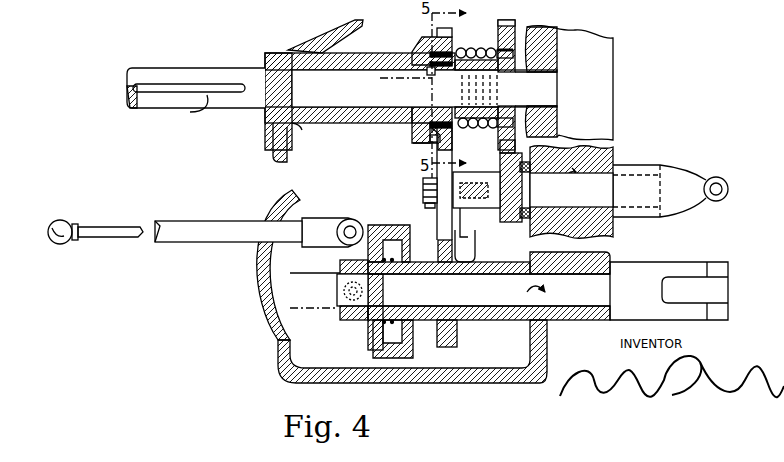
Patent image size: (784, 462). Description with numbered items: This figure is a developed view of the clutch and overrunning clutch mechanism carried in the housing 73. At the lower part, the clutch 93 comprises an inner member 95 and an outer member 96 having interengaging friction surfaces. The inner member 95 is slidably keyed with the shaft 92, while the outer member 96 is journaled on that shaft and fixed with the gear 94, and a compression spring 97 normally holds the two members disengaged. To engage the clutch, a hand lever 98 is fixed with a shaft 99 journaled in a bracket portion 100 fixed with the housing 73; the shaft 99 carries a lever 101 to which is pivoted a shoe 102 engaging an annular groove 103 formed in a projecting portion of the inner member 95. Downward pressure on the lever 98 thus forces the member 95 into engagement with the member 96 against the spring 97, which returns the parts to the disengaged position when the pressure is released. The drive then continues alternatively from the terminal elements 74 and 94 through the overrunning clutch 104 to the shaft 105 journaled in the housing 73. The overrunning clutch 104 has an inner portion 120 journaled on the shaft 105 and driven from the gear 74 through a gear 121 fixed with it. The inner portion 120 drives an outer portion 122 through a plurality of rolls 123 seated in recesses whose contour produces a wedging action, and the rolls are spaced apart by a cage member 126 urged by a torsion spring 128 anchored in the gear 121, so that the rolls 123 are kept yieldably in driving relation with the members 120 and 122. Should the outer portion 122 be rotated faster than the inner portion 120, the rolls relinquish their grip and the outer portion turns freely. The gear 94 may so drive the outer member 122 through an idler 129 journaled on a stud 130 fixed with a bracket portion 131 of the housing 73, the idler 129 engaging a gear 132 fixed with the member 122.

The housing 73 is at (278, 329).
The terminal element 74 is at (455, 208).
The shaft 92 is at (508, 302).
The clutch 93 is at (362, 340).
The gear 94 is at (452, 250).
The inner member 95 is at (370, 340).
The outer member 96 is at (406, 351).
The compression spring 97 is at (405, 248).
The lever 98 is at (131, 237).
The shaft 99 is at (358, 222).
The bracket portion 100 is at (283, 220).
The lever 101 is at (340, 256).
The shoe 102 is at (340, 301).
The annular groove 103 is at (353, 320).
The overrunning clutch 104 is at (410, 126).
The shaft 105 is at (554, 82).
The inner portion 120 is at (461, 106).
The gear 121 is at (502, 149).
The outer portion 122 is at (416, 137).
The rolls 123 is at (432, 143).
The cage member 126 is at (455, 47).
The torsion spring 128 is at (489, 54).
The idler 129 is at (437, 204).
The stud 130 is at (423, 190).
The bracket portion 131 is at (479, 226).
The gear 132 is at (452, 128).